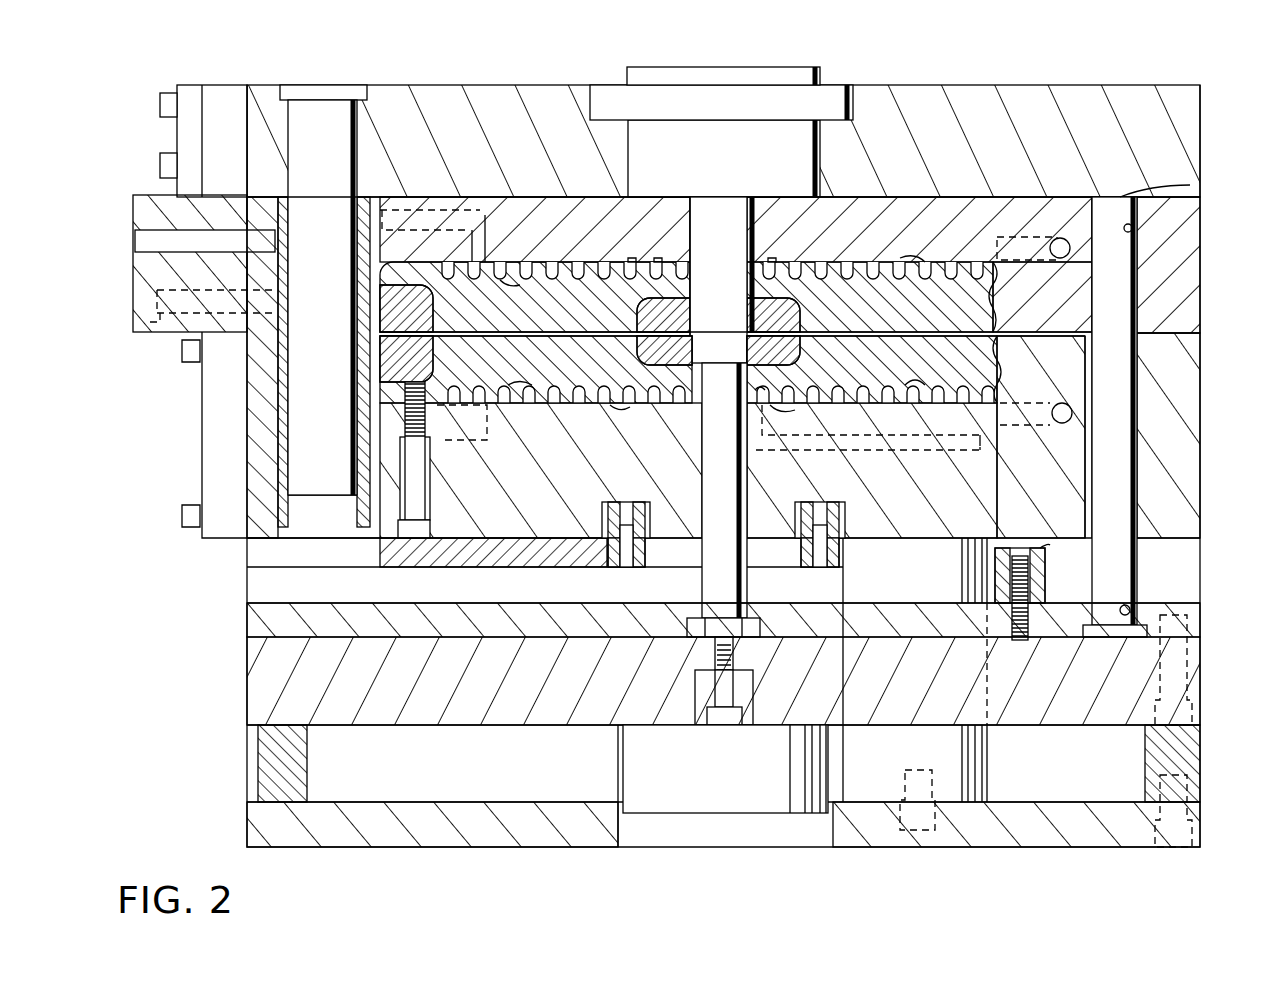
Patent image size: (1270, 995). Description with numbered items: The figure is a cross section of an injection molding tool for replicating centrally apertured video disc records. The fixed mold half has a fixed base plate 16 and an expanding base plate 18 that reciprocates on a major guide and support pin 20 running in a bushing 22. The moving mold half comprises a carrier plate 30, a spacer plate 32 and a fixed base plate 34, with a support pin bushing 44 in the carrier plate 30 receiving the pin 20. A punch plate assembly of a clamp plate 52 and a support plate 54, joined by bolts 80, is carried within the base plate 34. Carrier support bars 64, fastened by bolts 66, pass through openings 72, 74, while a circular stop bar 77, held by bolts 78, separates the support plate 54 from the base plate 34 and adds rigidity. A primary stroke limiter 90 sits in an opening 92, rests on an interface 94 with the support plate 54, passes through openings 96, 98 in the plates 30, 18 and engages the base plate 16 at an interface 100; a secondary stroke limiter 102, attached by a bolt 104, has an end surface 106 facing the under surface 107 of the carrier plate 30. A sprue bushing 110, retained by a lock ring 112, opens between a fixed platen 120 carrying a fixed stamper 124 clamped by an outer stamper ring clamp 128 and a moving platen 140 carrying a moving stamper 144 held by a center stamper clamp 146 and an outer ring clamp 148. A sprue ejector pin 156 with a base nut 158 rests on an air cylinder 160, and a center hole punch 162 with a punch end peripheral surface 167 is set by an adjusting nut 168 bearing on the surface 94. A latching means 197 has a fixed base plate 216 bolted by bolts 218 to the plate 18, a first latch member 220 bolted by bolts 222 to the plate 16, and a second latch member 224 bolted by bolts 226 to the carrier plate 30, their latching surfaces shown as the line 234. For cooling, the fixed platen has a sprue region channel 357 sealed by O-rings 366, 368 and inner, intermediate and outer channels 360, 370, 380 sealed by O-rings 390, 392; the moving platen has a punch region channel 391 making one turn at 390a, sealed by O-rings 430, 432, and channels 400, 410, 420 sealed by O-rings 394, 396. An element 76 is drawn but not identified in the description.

The fixed mold half fixed base plate 16 is at (1125, 95).
The fixed mold half expanding base plate 18 is at (1190, 258).
The major guide and support pin 20 is at (322, 105).
The fixed mold half major guide and support pin bushing 22 is at (380, 200).
The moving mold half carrier plate 30 is at (1185, 450).
The moving mold half spacer plate 32 is at (1195, 552).
The moving mold half fixed base plate 34 is at (1200, 838).
The moving mold half major support pin bushing 44 is at (278, 400).
The punch plate assembly clamp plate 52 is at (1200, 618).
The punch plate assembly support plate 54 is at (1200, 702).
The moving mold half carrier support bar 64 is at (990, 760).
The bolt 66 is at (935, 830).
The opening in clamp plate 72 is at (845, 602).
The opening in support plate 74 is at (990, 670).
The guide bushing 76 is at (908, 542).
The punch plate stop bar 77 is at (308, 775).
The punch plate stop bar bolt 78 is at (1190, 805).
The support plate to clamp plate bolt 80 is at (1188, 668).
The primary punch plate assembly stroke limiter 90 is at (1200, 338).
The opening in clamp plate 92 is at (1140, 602).
The interface with support plate 94 is at (1106, 640).
The opening in carrier plate 96 is at (1140, 312).
The opening in expanding base plate 98 is at (1140, 232).
The interface with fixed base plate 100 is at (1190, 186).
The secondary punch plate assembly stroke limiter 102 is at (1045, 578).
The bolt 104 is at (1035, 640).
The end surface 106 is at (1045, 548).
The under surface of carrier plate 107 is at (965, 560).
The sprue bushing 110 is at (762, 224).
The sprue bushing lock ring 112 is at (812, 97).
The fixed platen 120 is at (990, 298).
The fixed stamper 124 is at (997, 332).
The fixed outer stamper ring clamp 128 is at (432, 308).
The moving platen 140 is at (1000, 365).
The moving stamper 144 is at (997, 340).
The centering punch locator and moving center stamper clamp 146 is at (640, 347).
The moving outer stamper ring clamp 148 is at (432, 355).
The sprue ejector pin 156 is at (712, 655).
The sprue ejector pin base nut 158 is at (742, 712).
The air cylinder 160 is at (738, 778).
The center hole punch 162 is at (702, 452).
The punch end peripheral surface 167 is at (662, 365).
The center hole punch adjusting nut 168 is at (752, 615).
The latching means 197 is at (128, 195).
The fixed base plate of latching means 216 is at (133, 275).
The bolts 218 is at (155, 318).
The first latch member 220 is at (212, 92).
The bolts 222 is at (158, 165).
The second latch member 224 is at (205, 458).
The bolts 226 is at (182, 350).
The pivot pin surface 234 is at (140, 243).
The fixed platen sprue region cooling channel 357 is at (678, 292).
The fixed platen inner region cooling channel 360 is at (552, 262).
The O-ring 366 is at (656, 258).
The O-ring 368 is at (698, 258).
The fixed platen intermediate cooling channel 370 is at (505, 285).
The fixed platen outer region cooling channel 380 is at (492, 258).
The O-ring 390 is at (632, 258).
The turn of punch region cooling channel 390a is at (660, 407).
The moving platen punch region cooling channel 391 is at (855, 452).
The O-ring 392 is at (440, 260).
The O-ring 394 is at (432, 418).
The O-ring 396 is at (600, 405).
The moving platen inner region cooling channel 400 is at (560, 405).
The moving platen intermediate region cooling channel 410 is at (530, 388).
The moving platen outer region cooling channel 420 is at (480, 392).
The O-ring 430 is at (790, 410).
The O-ring 432 is at (762, 387).